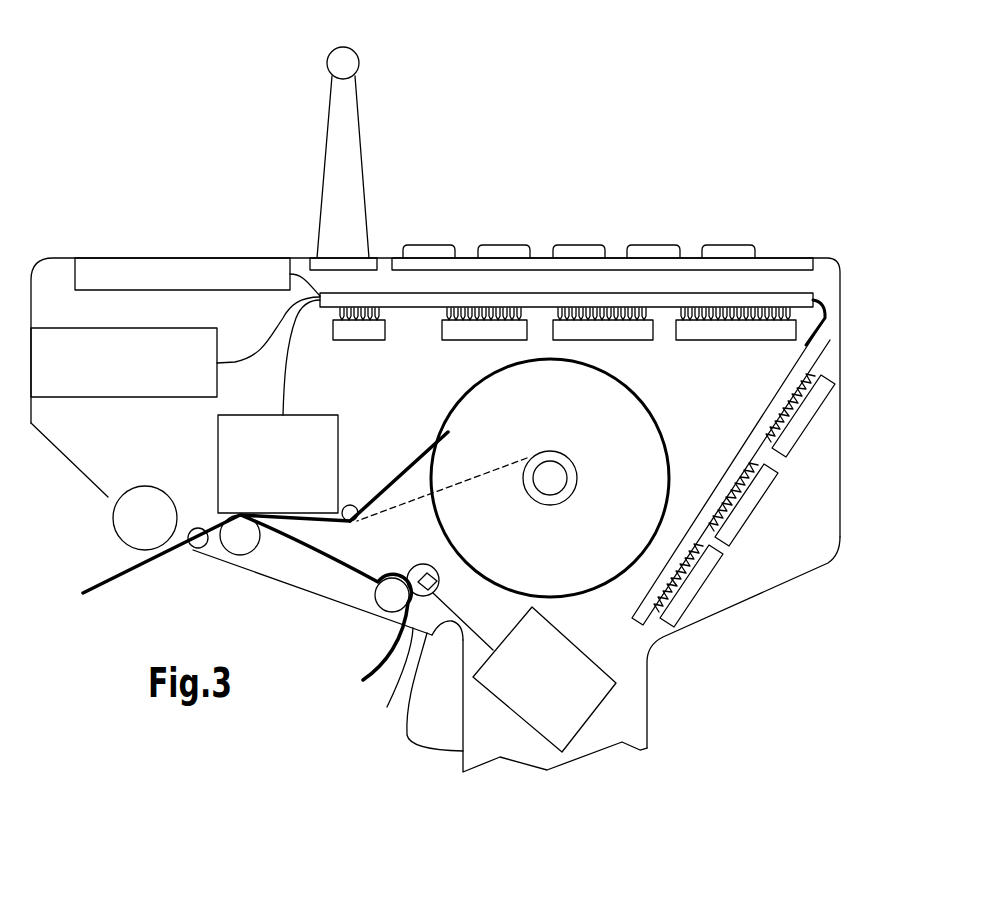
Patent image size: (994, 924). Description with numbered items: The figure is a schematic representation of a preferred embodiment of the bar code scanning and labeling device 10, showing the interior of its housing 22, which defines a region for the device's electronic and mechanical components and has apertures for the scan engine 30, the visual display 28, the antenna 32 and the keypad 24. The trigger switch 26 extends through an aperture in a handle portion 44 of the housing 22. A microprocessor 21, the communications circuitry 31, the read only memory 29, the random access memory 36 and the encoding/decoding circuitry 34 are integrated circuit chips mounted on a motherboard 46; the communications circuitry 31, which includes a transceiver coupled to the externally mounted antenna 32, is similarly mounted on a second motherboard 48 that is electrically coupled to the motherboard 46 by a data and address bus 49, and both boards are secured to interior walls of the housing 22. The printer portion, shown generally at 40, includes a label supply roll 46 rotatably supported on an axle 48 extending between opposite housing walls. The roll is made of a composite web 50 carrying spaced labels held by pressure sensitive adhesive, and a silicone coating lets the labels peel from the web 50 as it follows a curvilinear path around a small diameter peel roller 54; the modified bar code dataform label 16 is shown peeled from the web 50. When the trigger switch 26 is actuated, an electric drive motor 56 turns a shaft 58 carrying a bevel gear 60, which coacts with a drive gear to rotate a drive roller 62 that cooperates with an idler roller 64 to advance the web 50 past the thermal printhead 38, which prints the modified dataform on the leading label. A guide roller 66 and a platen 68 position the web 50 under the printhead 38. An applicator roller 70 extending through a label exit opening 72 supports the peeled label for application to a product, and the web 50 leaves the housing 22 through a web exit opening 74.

The scanning and labeling device 10 is at (143, 160).
The modified bar code dataform label 16 is at (113, 578).
The microprocessor 21 is at (750, 340).
The housing 22 is at (765, 627).
The keypad 24 is at (588, 235).
The trigger switch 26 is at (447, 740).
The visual display 28 is at (262, 273).
The read only memory 29 is at (607, 342).
The scan engine 30 is at (45, 380).
The communications circuitry 31 is at (798, 503).
The antenna 32 is at (343, 147).
The encoding/decoding circuitry 34 is at (338, 338).
The random access memory 36 is at (480, 338).
The thermal printhead 38 is at (218, 460).
The printer module 40 is at (368, 429).
The handle portion 44 is at (632, 722).
The motherboard 46 is at (787, 302).
The second motherboard 48 is at (812, 357).
The data and address bus 49 is at (827, 320).
The composite web 50 is at (412, 452).
The peel roller 54 is at (190, 548).
The electric drive motor 56 is at (548, 737).
The shaft 58 is at (407, 735).
The bevel gear 60 is at (437, 577).
The drive roller 62 is at (423, 571).
The idler roller 64 is at (380, 594).
The guide roller 66 is at (350, 522).
The platen 68 is at (238, 540).
The applicator roller 70 is at (133, 530).
The label exit opening 72 is at (108, 500).
The web exit opening 74 is at (387, 707).